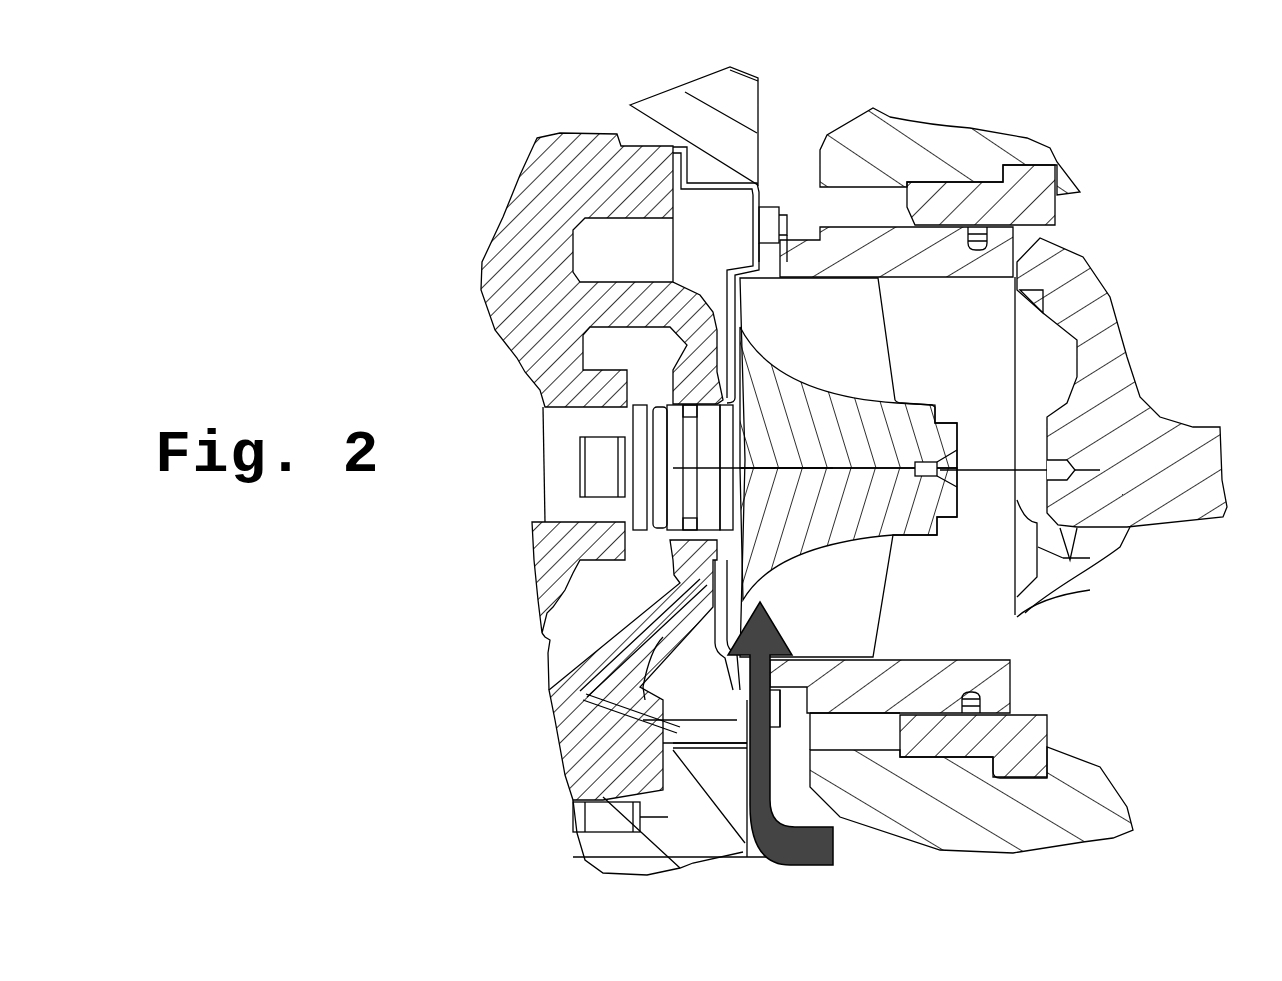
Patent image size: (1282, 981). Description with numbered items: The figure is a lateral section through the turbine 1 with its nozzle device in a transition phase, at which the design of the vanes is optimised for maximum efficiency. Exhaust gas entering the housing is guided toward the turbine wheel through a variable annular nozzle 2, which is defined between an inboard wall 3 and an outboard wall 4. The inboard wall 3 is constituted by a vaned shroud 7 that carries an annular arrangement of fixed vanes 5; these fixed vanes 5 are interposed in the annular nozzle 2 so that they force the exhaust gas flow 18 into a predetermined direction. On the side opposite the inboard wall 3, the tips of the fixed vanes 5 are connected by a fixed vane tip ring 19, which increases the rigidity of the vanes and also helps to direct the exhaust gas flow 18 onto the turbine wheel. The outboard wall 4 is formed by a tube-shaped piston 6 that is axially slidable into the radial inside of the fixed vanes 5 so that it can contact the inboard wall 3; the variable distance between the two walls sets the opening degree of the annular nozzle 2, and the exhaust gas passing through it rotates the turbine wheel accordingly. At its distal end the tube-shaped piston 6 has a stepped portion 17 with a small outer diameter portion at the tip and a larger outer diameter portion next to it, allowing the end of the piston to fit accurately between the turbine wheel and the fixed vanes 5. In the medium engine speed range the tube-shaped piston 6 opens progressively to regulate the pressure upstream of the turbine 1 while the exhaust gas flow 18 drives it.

The turbine 1 is at (395, 558).
The annular nozzle 2 is at (790, 155).
The inboard wall 3 is at (752, 207).
The outboard wall 4 is at (785, 262).
The fixed vanes 5 is at (767, 222).
The tube-shaped piston 6 is at (1110, 385).
The vaned shroud 7 is at (732, 676).
The stepped portion 17 is at (783, 668).
The exhaust gas flow 18 is at (757, 715).
The fixed vane tip ring 19 is at (783, 224).